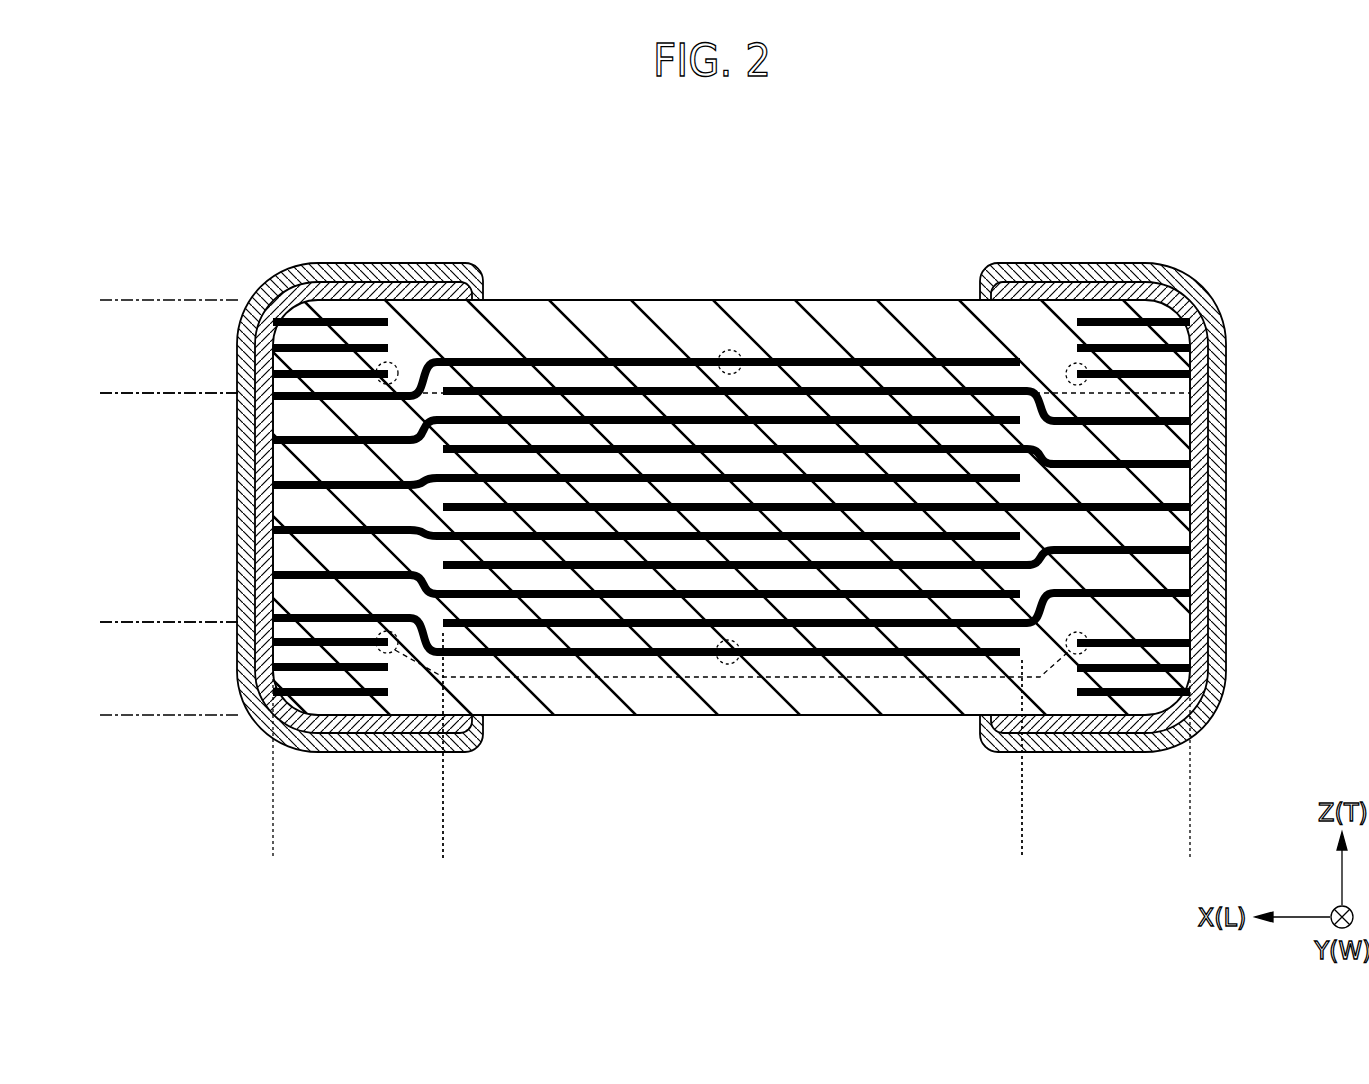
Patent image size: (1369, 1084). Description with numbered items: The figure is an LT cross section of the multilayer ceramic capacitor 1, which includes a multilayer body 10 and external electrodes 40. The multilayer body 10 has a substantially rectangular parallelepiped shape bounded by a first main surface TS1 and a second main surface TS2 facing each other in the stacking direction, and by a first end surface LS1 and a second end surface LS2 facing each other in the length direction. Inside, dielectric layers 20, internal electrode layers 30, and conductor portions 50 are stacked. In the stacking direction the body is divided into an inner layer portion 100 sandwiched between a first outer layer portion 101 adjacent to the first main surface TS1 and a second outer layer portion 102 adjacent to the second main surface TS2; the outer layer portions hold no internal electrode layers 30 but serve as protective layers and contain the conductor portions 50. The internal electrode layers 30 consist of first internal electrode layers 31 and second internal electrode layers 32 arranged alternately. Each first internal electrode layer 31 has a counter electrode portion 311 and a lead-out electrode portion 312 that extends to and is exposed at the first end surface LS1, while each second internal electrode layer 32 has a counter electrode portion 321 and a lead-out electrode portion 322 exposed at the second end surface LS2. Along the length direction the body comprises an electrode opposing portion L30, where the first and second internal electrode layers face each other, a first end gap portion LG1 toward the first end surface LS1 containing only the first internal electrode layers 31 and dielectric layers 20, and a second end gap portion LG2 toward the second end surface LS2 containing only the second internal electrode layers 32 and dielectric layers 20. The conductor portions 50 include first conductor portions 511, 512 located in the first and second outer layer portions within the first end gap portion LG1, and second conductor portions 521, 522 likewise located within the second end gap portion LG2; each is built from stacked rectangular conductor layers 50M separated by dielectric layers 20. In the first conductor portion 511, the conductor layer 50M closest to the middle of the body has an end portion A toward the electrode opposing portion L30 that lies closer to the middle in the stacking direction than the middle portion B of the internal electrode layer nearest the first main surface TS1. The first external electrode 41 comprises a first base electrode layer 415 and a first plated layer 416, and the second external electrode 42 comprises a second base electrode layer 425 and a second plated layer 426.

The multilayer ceramic capacitor 1 is at (1206, 238).
The multilayer body 10 is at (684, 515).
The dielectric layers 20 is at (833, 637).
The internal electrode layers 30 is at (731, 396).
The first internal electrode layers 31 is at (646, 426).
The second internal electrode layers 32 is at (816, 426).
The counter electrode portion 311 is at (640, 362).
The lead-out electrode portion 312 is at (380, 395).
The counter electrode portion 321 is at (880, 388).
The lead-out electrode portion 322 is at (1070, 410).
The external electrodes 40 is at (733, 507).
The first external electrode 41 is at (290, 507).
The second external electrode 42 is at (1174, 507).
The first base electrode layer 415 is at (262, 527).
The first plated layer 416 is at (164, 483).
The second base electrode layer 425 is at (1099, 507).
The second plated layer 426 is at (1200, 553).
The conductor portions 50 is at (740, 508).
The first conductor portion 511 is at (337, 312).
The first conductor portion 512 is at (337, 716).
The second conductor portion 521 is at (1130, 312).
The second conductor portion 522 is at (1130, 716).
The conductor layers 50M is at (362, 322).
The inner layer portion 100 is at (100, 393).
The first outer layer portion 101 is at (100, 300).
The second outer layer portion 102 is at (100, 622).
The first main surface TS1 is at (520, 300).
The second main surface TS2 is at (567, 716).
The first end surface LS1 is at (270, 580).
The second end surface LS2 is at (1193, 603).
The first end gap portion LG1 is at (443, 858).
The second end gap portion LG2 is at (1022, 858).
The electrode opposing portion L30 is at (443, 858).
The end portion A is at (392, 366).
The middle portion B is at (731, 350).